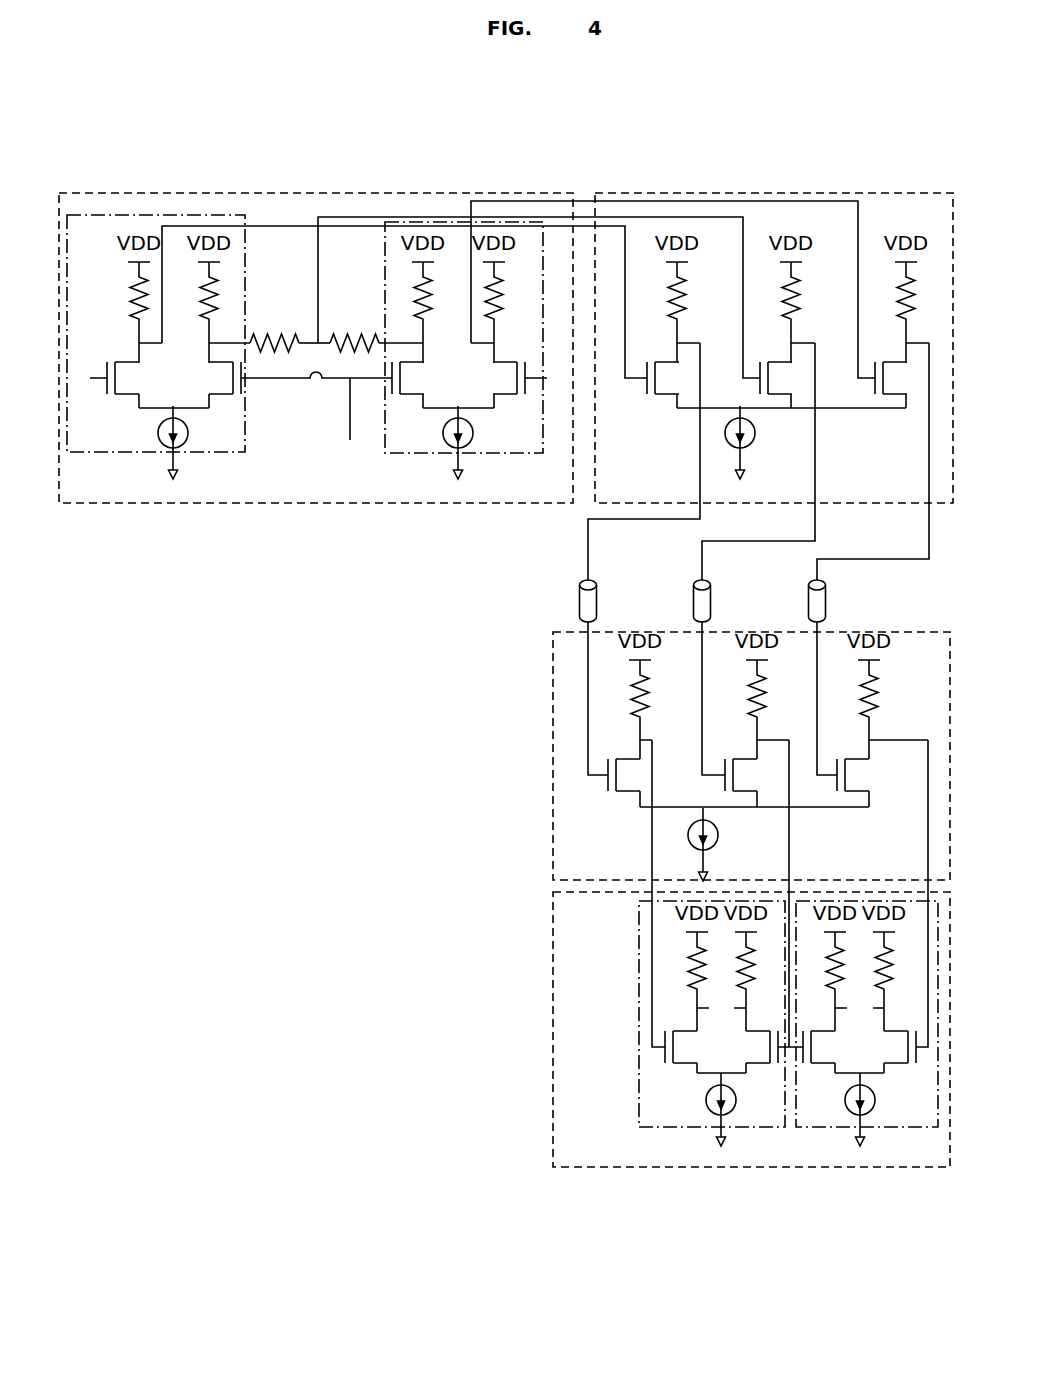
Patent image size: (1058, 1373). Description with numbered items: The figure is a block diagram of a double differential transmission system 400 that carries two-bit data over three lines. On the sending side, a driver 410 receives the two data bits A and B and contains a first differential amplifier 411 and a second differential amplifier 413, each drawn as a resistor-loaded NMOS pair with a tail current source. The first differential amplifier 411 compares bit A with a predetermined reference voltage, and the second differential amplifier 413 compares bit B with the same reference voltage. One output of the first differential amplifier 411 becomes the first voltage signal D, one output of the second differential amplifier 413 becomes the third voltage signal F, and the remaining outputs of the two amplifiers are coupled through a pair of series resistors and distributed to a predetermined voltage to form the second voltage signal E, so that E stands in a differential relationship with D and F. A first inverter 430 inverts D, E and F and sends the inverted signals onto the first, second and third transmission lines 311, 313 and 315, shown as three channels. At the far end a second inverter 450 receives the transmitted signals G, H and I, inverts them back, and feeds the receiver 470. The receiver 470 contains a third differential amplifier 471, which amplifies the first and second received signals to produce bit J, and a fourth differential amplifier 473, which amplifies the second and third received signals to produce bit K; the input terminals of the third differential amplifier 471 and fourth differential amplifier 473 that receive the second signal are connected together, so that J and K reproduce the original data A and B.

The double differential transmission system 400 is at (810, 144).
The driver 410 is at (322, 193).
The first differential amplifier 411 is at (245, 432).
The second differential amplifier 413 is at (522, 453).
The first inverter 430 is at (672, 193).
The first transmission line 311 is at (597, 600).
The second transmission line 313 is at (711, 600).
The third transmission line 315 is at (826, 600).
The second inverter 450 is at (553, 759).
The receiver 470 is at (553, 992).
The third differential amplifier 471 is at (639, 1088).
The fourth differential amplifier 473 is at (924, 1127).